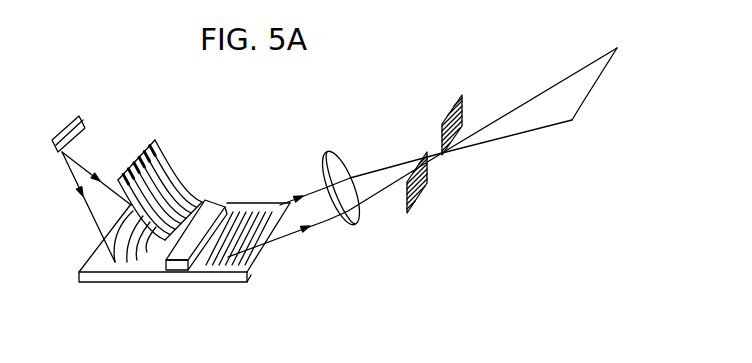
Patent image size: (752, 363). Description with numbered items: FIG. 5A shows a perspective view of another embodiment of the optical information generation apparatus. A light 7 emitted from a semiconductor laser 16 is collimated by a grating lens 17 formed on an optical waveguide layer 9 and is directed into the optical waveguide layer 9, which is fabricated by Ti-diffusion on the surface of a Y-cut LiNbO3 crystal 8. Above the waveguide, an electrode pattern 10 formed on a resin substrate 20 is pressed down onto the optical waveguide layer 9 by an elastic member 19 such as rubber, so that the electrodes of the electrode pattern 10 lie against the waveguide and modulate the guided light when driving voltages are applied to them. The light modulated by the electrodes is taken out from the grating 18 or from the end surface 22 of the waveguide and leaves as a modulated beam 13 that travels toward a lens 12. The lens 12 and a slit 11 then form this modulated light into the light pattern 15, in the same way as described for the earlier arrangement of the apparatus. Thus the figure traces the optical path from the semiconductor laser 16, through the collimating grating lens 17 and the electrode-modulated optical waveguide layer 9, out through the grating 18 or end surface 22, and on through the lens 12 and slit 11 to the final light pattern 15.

The light 7 is at (92, 218).
The Y-cut LiNbO3 crystal 8 is at (85, 278).
The optical waveguide layer 9 is at (117, 277).
The electrode pattern 10 is at (175, 164).
The slit 11 is at (420, 182).
The lens 12 is at (355, 222).
The output light beam 13 is at (296, 233).
The light pattern 15 is at (585, 102).
The semiconductor laser 16 is at (82, 123).
The grating lens 17 is at (140, 258).
The grating 18 is at (221, 262).
The elastic member 19 is at (210, 212).
The resin substrate 20 is at (158, 142).
The end surface 22 is at (260, 246).